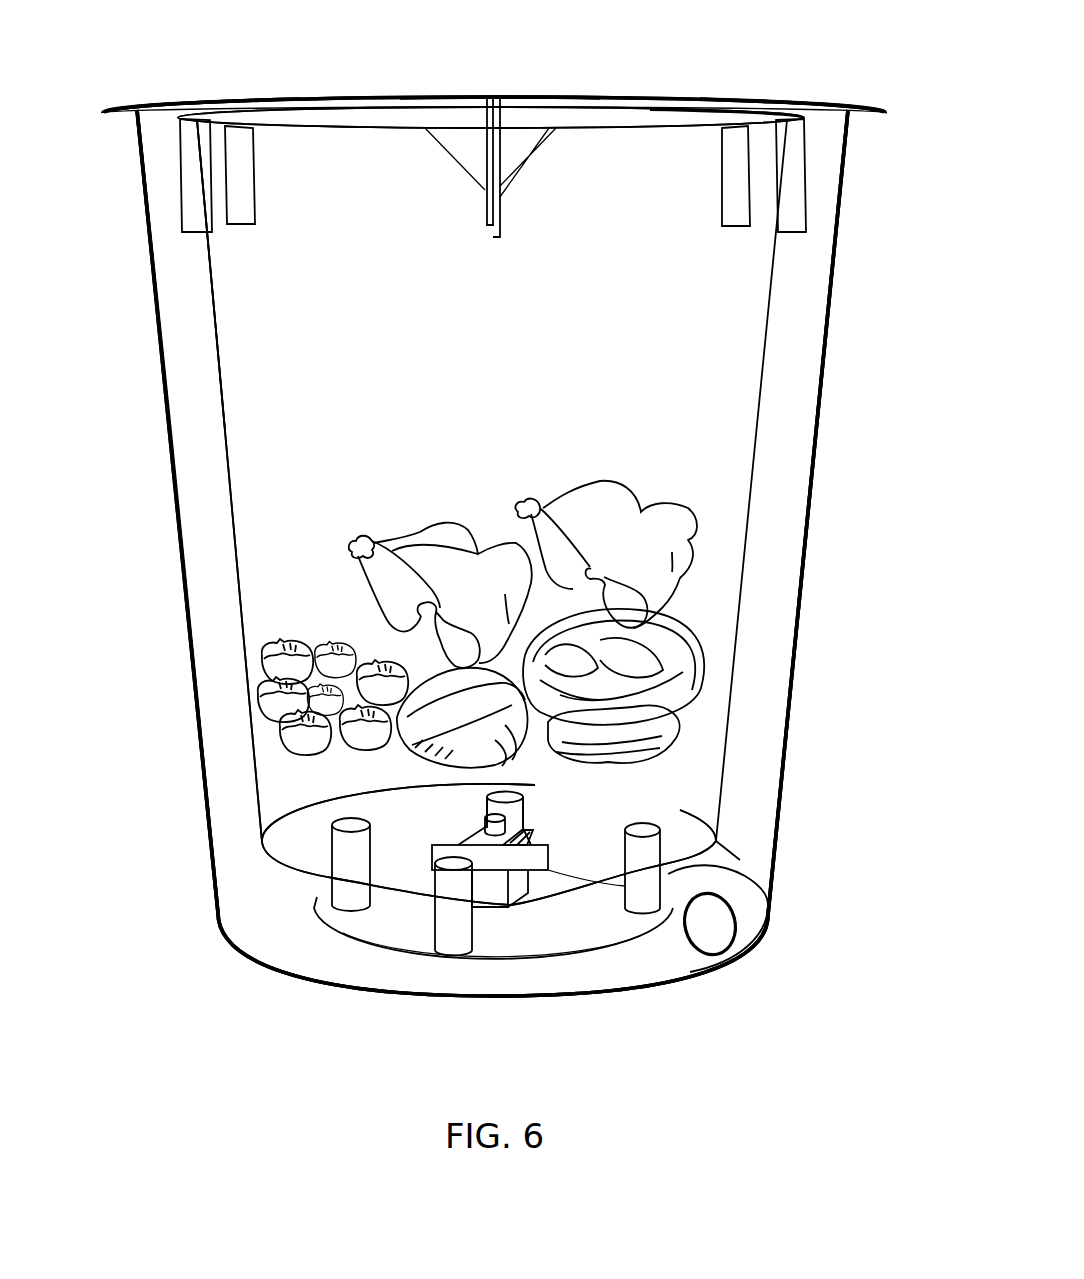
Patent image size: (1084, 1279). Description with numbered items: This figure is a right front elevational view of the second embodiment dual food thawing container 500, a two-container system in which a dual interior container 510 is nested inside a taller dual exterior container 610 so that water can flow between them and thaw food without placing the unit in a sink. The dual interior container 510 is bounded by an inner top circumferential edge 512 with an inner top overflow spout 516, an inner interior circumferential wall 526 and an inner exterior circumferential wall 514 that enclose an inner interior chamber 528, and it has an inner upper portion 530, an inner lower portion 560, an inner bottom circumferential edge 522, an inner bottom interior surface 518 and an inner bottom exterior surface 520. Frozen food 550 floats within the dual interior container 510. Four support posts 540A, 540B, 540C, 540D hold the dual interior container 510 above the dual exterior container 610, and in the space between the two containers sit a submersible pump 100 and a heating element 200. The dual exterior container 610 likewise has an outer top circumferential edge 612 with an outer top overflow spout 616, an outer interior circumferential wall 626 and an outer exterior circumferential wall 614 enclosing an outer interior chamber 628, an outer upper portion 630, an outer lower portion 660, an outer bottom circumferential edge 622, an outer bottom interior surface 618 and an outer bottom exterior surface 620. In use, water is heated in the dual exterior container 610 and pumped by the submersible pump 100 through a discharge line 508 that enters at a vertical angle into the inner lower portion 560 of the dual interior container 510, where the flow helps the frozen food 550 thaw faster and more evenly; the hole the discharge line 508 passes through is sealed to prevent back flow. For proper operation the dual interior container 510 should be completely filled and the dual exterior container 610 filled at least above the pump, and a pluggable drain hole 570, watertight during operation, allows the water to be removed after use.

The dual food thawing container 500 is at (910, 84).
The submersible pump 100 is at (508, 917).
The heating element 200 is at (547, 880).
The discharge line 508 is at (480, 811).
The dual interior container 510 is at (778, 285).
The inner top circumferential edge 512 is at (718, 110).
The inner exterior circumferential wall 514 is at (258, 403).
The inner top overflow spout 516 is at (460, 92).
The inner bottom interior surface 518 is at (704, 862).
The inner bottom exterior surface 520 is at (410, 848).
The inner bottom circumferential edge 522 is at (718, 840).
The inner interior circumferential wall 526 is at (344, 122).
The inner interior chamber 528 is at (557, 93).
The inner upper portion 530 is at (203, 282).
The support post 540A is at (349, 896).
The support post 540B is at (431, 951).
The support post 540C is at (651, 922).
The support post 540D is at (532, 798).
The frozen food 550 is at (368, 595).
The inner lower portion 560 is at (240, 700).
The drain hole 570 is at (716, 937).
The dual exterior container 610 is at (832, 357).
The outer top circumferential edge 612 is at (630, 97).
The outer exterior circumferential wall 614 is at (790, 453).
The outer top overflow spout 616 is at (497, 93).
The outer bottom interior surface 618 is at (770, 928).
The outer bottom exterior surface 620 is at (283, 970).
The outer bottom circumferential edge 622 is at (762, 896).
The outer interior circumferential wall 626 is at (185, 104).
The outer interior chamber 628 is at (787, 88).
The outer upper portion 630 is at (154, 332).
The outer lower portion 660 is at (201, 750).